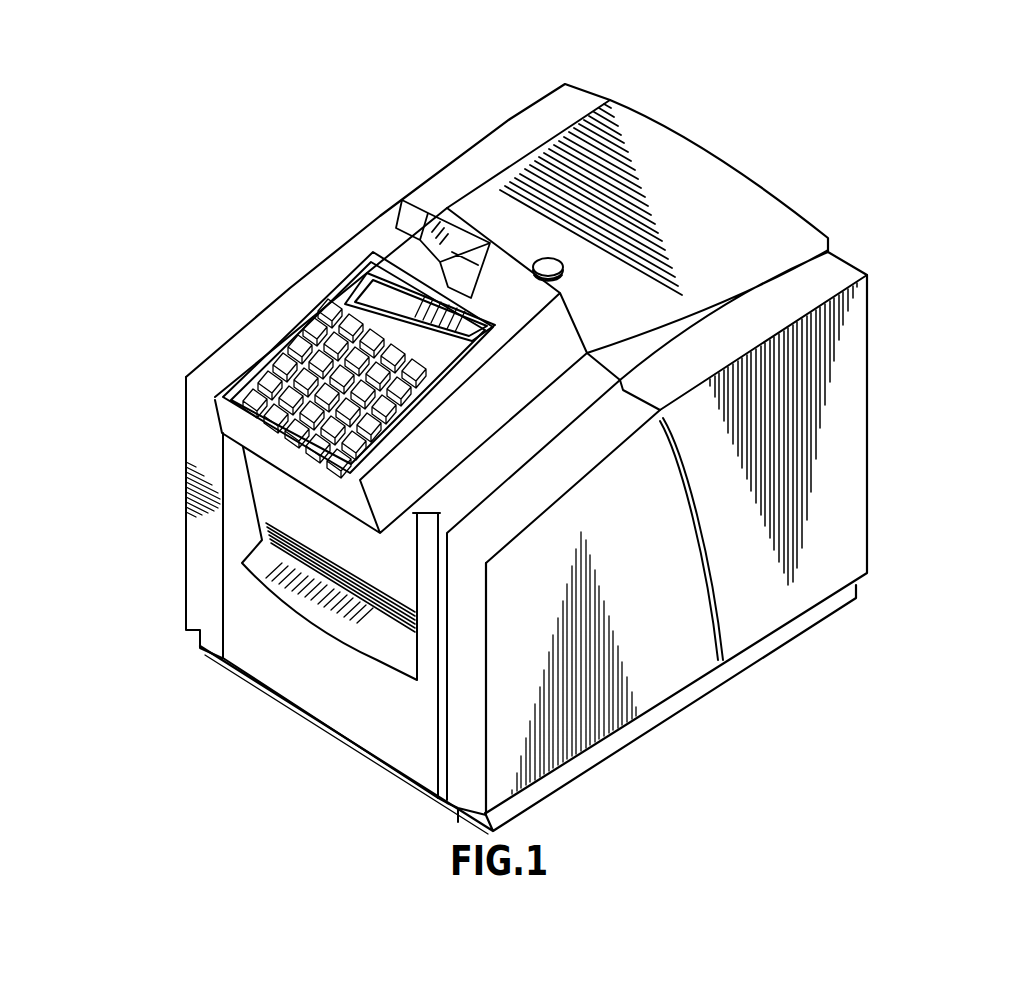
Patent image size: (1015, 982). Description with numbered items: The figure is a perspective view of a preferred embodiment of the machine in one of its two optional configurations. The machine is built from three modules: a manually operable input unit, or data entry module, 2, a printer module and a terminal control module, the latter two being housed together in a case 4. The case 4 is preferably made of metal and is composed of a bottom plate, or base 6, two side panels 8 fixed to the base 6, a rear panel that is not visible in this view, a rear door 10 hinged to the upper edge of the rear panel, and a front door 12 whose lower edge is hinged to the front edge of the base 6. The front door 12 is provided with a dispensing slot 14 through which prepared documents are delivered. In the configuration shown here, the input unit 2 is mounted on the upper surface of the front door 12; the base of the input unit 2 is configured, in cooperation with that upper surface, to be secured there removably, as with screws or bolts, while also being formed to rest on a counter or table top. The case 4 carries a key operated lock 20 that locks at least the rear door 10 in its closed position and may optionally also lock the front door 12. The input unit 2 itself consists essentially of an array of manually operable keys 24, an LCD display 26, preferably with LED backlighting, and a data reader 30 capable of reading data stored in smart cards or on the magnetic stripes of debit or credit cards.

The input unit 2 is at (290, 284).
The case 4 is at (911, 529).
The base 6 is at (558, 788).
The side panels 8 is at (510, 118).
The rear door 10 is at (716, 178).
The front door 12 is at (540, 425).
The dispensing slot 14 is at (292, 544).
The key operated lock 20 is at (549, 258).
The keys 24 is at (298, 355).
The LCD display 26 is at (383, 292).
The data reader 30 is at (382, 208).